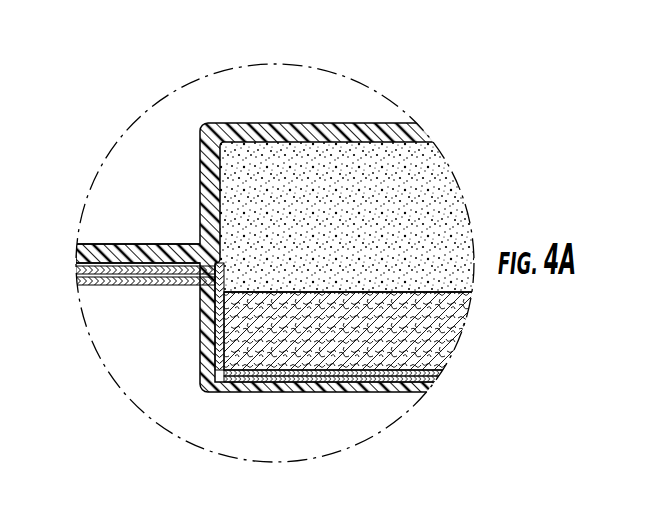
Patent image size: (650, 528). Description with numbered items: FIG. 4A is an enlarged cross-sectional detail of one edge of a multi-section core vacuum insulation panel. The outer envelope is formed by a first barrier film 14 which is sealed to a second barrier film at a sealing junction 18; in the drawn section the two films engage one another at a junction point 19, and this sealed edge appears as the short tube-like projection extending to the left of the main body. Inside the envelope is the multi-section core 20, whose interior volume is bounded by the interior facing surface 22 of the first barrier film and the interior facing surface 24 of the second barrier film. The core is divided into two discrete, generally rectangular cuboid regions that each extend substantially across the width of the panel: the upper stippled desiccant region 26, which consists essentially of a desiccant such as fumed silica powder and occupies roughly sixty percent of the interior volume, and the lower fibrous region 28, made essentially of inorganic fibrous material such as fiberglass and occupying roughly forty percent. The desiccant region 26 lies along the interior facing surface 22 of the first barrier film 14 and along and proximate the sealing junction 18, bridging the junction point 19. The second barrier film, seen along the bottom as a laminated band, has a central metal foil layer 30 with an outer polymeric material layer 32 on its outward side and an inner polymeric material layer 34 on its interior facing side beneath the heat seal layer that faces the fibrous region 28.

The first barrier film 14 is at (332, 122).
The sealing junction 18 is at (103, 258).
The junction point 19 is at (210, 278).
The multi-section core 20 is at (262, 158).
The interior facing surface of the first barrier film 22 is at (220, 205).
The interior facing surface of the second barrier film 24 is at (272, 342).
The desiccant region 26 is at (402, 205).
The fibrous region 28 is at (368, 327).
The metal foil layer 30 is at (350, 378).
The polymeric material layer 32 is at (243, 388).
The polymeric material layer 34 is at (437, 355).